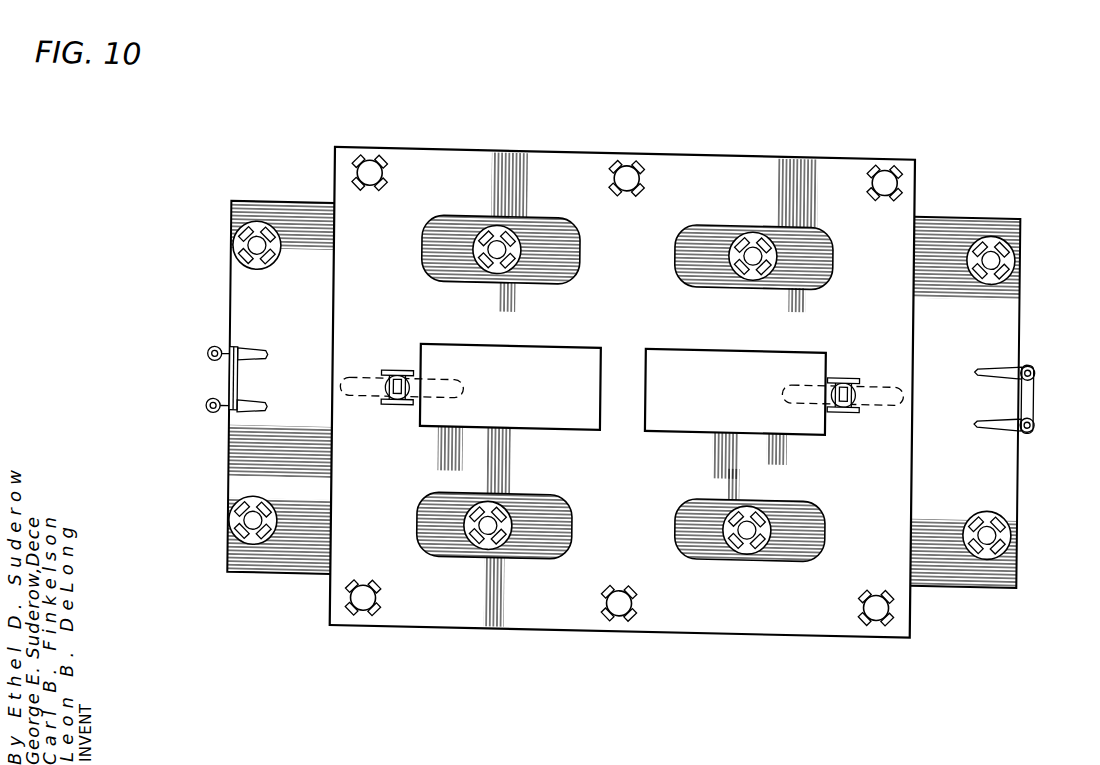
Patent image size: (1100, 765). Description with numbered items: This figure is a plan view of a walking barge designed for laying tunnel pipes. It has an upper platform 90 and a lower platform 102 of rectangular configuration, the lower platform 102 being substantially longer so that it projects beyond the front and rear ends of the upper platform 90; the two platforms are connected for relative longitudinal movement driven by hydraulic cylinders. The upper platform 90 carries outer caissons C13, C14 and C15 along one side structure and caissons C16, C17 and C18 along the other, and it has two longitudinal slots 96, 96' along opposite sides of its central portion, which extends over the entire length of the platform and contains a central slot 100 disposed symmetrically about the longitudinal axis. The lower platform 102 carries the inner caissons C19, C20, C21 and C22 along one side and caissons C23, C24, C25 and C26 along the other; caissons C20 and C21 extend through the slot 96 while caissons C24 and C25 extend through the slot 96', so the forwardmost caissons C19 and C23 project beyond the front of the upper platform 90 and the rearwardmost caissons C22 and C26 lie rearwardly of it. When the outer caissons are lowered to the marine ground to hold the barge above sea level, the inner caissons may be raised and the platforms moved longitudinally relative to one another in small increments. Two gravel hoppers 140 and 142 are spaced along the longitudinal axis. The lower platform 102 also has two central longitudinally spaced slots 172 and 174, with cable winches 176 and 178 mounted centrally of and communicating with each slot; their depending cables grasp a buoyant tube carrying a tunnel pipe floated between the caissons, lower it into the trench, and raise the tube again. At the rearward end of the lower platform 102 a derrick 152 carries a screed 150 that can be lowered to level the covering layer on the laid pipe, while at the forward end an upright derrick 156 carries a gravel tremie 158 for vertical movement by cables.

The central slot 100 is at (958, 146).
The lower platform 102 is at (978, 200).
The upper platform 90 is at (700, 160).
The longitudinal slot 96 is at (623, 378).
The longitudinal slot 96' is at (750, 238).
The gravel hopper 140 is at (548, 395).
The gravel hopper 142 is at (749, 394).
The central slot 172 is at (352, 376).
The central slot 174 is at (890, 374).
The cable winch 176 is at (400, 400).
The cable winch 178 is at (850, 402).
The screed 150 is at (1034, 382).
The derrick 152 is at (1003, 420).
The upright derrick 156 is at (248, 414).
The gravel tremie 158 is at (215, 335).
The caisson C13 is at (369, 613).
The caisson C14 is at (626, 613).
The caisson C15 is at (882, 613).
The caisson C16 is at (374, 162).
The caisson C17 is at (630, 163).
The caisson C18 is at (887, 163).
The caisson C19 is at (255, 527).
The caisson C20 is at (501, 531).
The caisson C21 is at (757, 518).
The caisson C22 is at (992, 545).
The caisson C23 is at (258, 230).
The caisson C24 is at (499, 242).
The caisson C25 is at (755, 240).
The caisson C26 is at (1010, 246).